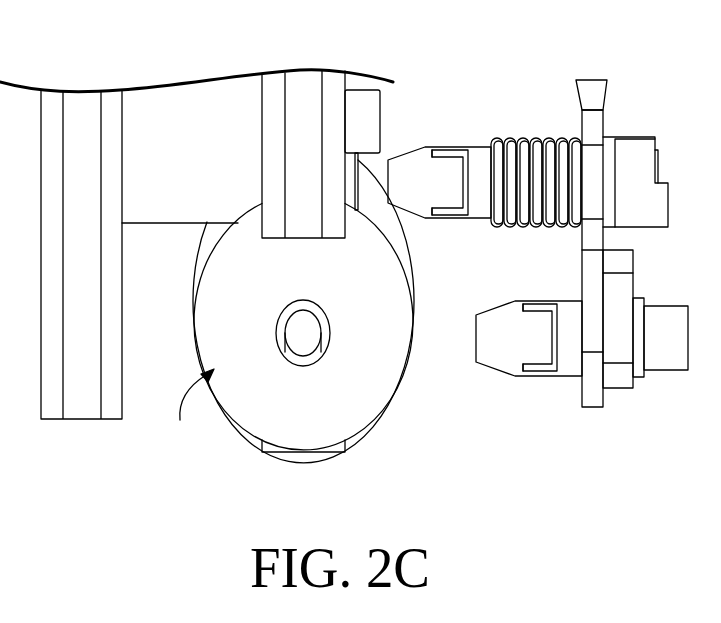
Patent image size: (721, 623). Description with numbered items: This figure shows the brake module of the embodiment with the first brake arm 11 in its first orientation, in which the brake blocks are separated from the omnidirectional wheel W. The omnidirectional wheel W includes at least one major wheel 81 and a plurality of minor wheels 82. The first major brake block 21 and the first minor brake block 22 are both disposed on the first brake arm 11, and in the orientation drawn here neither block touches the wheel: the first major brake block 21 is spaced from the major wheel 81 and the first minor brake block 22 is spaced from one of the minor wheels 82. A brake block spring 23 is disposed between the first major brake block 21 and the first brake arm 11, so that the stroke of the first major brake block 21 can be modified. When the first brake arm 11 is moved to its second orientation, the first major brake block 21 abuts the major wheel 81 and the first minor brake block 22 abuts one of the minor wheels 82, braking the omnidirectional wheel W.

The major wheel 81 is at (334, 90).
The minor wheels 82 is at (363, 443).
The omnidirectional wheel W is at (190, 411).
The first major brake block 21 is at (449, 170).
The first minor brake block 22 is at (532, 350).
The brake block spring 23 is at (533, 137).
The first brake arm 11 is at (592, 400).